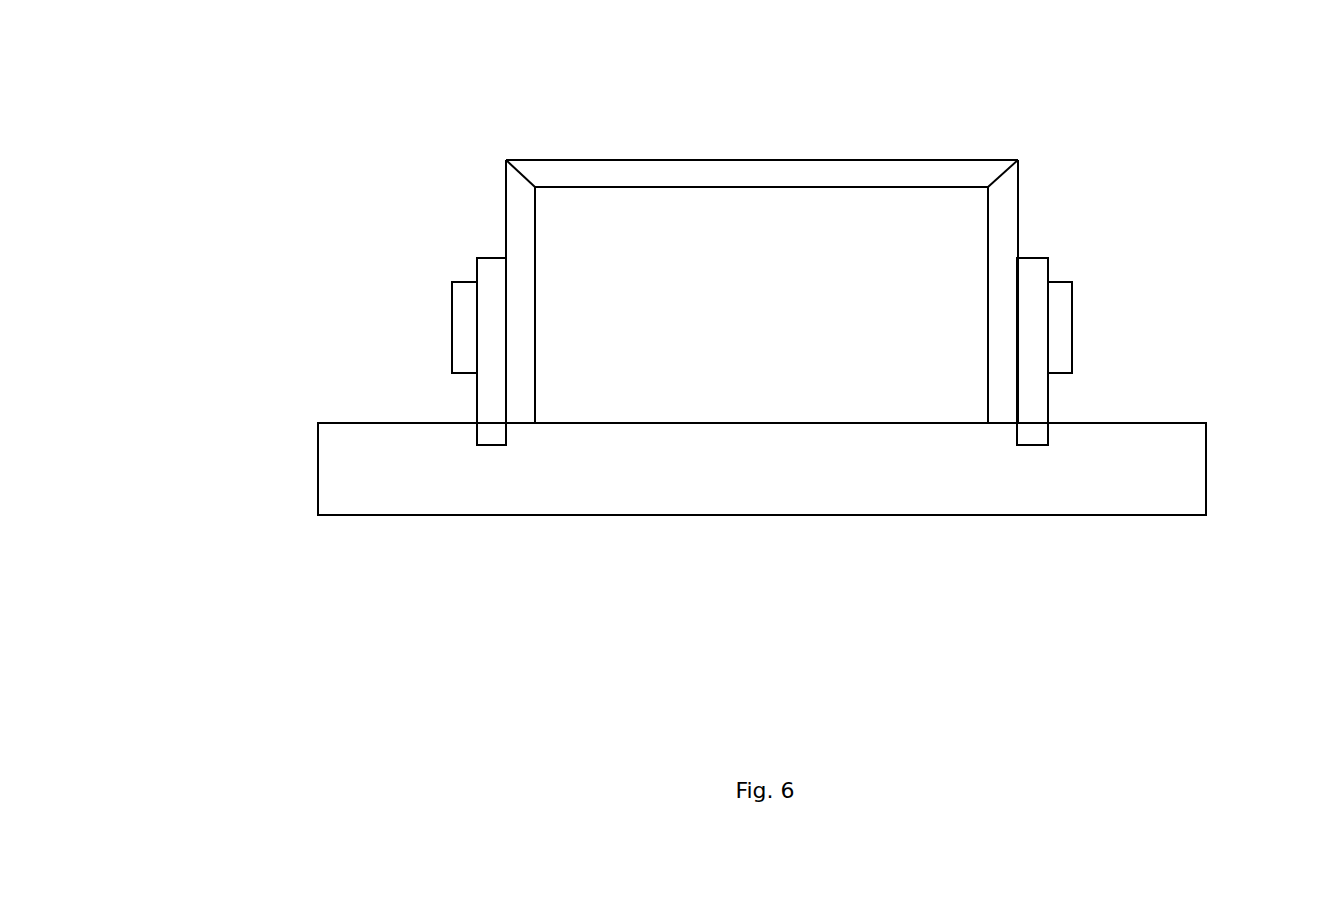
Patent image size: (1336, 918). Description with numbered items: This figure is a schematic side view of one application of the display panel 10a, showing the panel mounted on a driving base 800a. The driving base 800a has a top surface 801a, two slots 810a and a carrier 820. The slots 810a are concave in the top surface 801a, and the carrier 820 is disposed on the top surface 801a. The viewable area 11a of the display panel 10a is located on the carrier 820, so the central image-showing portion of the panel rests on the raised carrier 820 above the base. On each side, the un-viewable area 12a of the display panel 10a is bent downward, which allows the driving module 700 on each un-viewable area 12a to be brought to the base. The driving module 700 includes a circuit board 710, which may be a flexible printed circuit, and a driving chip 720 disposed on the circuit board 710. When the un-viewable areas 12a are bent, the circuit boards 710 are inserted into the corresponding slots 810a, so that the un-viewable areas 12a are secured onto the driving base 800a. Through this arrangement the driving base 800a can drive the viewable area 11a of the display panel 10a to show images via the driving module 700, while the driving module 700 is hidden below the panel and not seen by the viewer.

The display panel 10a is at (759, 229).
The viewable area 11a is at (773, 167).
The un-viewable area 12a is at (517, 202).
The driving module 700 is at (363, 351).
The circuit board 710 is at (492, 407).
The driving chip 720 is at (462, 348).
The driving base 800a is at (917, 482).
The top surface 801a is at (1162, 422).
The slot 810a is at (485, 462).
The carrier 820 is at (795, 392).